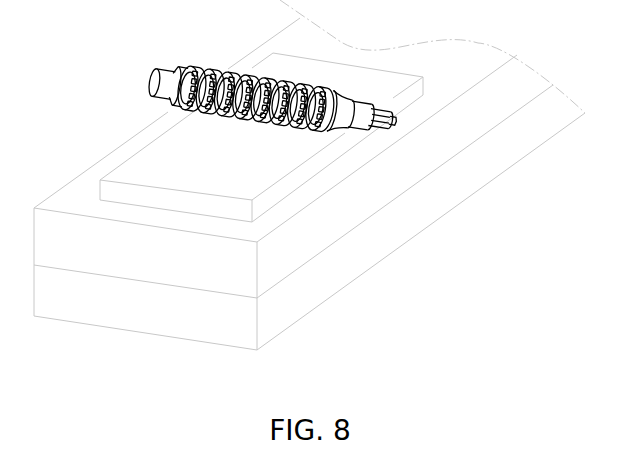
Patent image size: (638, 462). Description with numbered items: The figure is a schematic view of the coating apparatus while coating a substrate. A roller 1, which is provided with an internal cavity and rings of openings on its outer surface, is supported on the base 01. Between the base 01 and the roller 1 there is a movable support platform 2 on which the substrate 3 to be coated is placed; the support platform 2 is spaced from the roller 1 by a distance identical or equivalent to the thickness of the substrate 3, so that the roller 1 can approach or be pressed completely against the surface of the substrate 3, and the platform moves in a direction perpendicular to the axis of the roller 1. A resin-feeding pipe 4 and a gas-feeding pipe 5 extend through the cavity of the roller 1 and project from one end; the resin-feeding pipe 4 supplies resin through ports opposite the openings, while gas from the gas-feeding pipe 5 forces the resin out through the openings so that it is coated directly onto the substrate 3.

The roller 1 is at (322, 147).
The support platform 2 is at (340, 217).
The substrate 3 is at (263, 200).
The resin-feeding pipe 4 is at (387, 128).
The gas-feeding pipe 5 is at (393, 113).
The base 01 is at (508, 142).